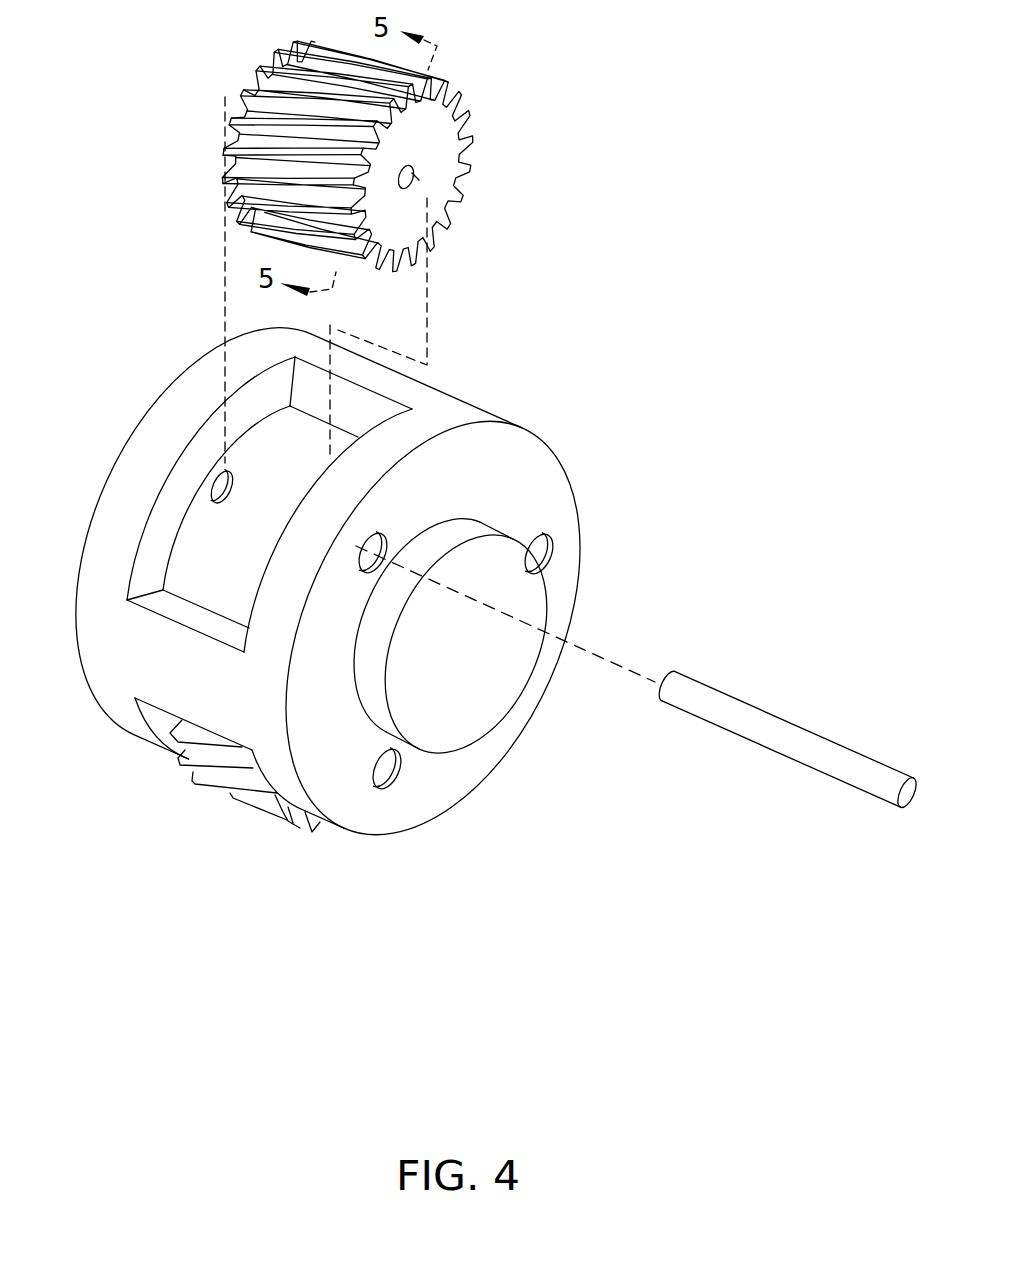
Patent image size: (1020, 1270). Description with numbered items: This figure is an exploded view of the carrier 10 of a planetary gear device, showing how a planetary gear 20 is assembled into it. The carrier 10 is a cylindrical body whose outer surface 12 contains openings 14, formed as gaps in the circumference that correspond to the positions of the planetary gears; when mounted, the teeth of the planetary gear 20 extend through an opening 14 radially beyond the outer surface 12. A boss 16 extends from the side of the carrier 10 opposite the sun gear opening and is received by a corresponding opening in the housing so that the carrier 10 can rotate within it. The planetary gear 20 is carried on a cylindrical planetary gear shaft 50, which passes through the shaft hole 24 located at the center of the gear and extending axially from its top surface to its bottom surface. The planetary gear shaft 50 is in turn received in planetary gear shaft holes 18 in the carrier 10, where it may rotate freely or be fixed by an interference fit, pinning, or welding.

The carrier 10 is at (522, 455).
The outer surface 12 is at (110, 640).
The openings 14 is at (152, 558).
The boss 16 is at (483, 717).
The planetary gear shaft holes 18 is at (215, 492).
The planetary gear 20 is at (462, 158).
The shaft hole 24 is at (419, 180).
The planetary gear shaft 50 is at (755, 717).